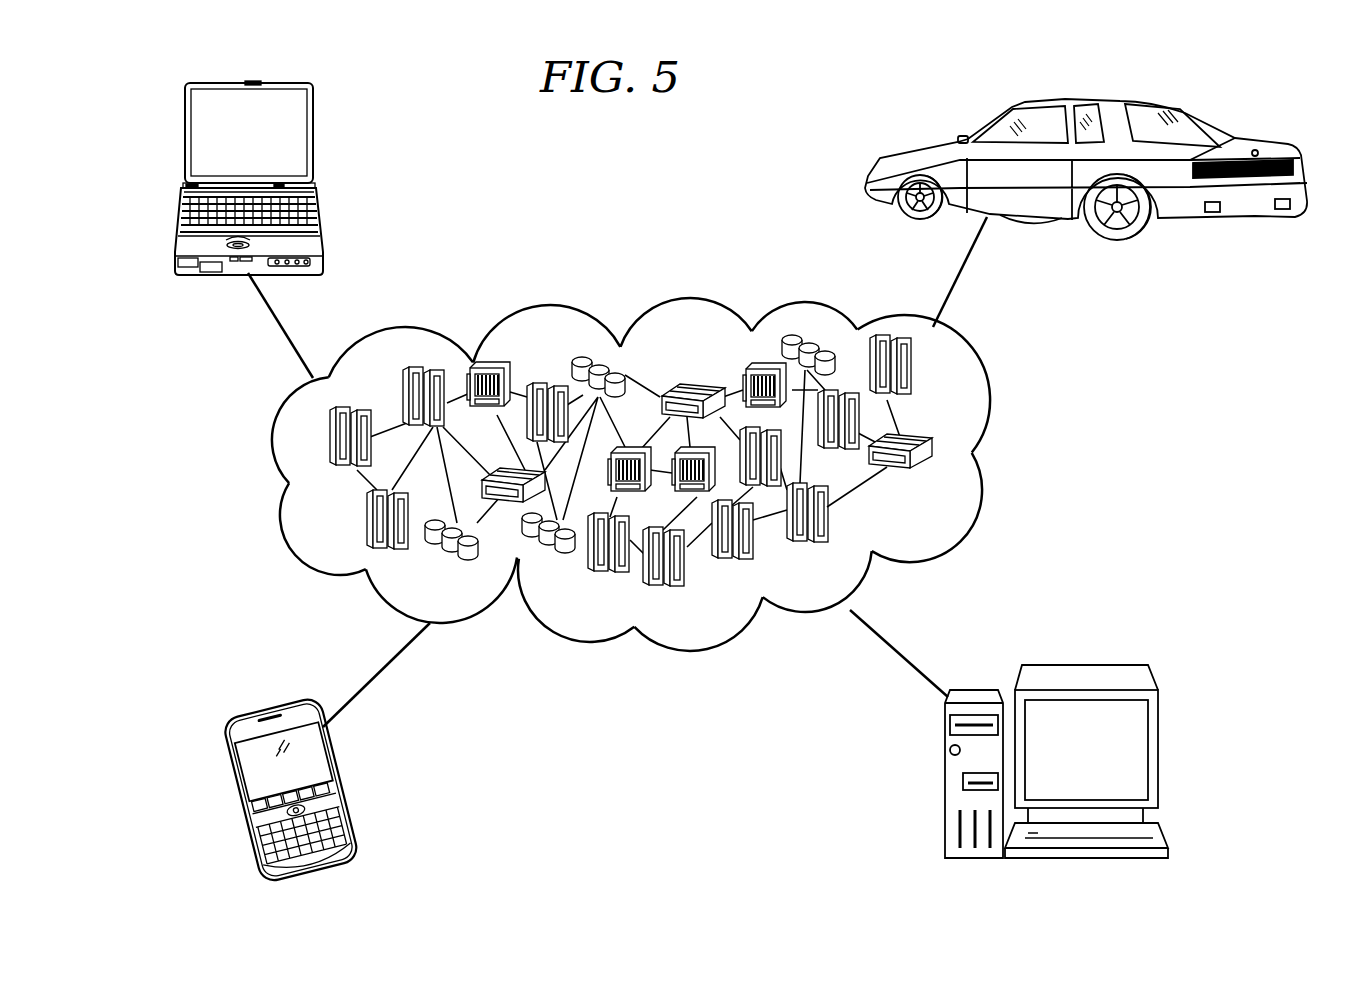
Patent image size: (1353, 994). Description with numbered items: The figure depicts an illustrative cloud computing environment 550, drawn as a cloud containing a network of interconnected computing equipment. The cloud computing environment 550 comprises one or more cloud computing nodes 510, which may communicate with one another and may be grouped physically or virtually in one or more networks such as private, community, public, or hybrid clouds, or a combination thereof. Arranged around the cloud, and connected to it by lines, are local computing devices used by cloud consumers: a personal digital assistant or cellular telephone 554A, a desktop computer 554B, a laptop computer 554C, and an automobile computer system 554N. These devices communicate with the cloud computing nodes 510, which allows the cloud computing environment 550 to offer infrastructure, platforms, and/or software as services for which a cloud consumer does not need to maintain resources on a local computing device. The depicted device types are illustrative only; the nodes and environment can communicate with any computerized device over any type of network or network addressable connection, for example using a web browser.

The cloud computing environment 550 is at (988, 391).
The cloud computing nodes 510 is at (945, 480).
The cellular telephone 554A is at (232, 776).
The desktop computer 554B is at (1085, 665).
The laptop computer 554C is at (183, 127).
The automobile computer system 554N is at (1266, 142).